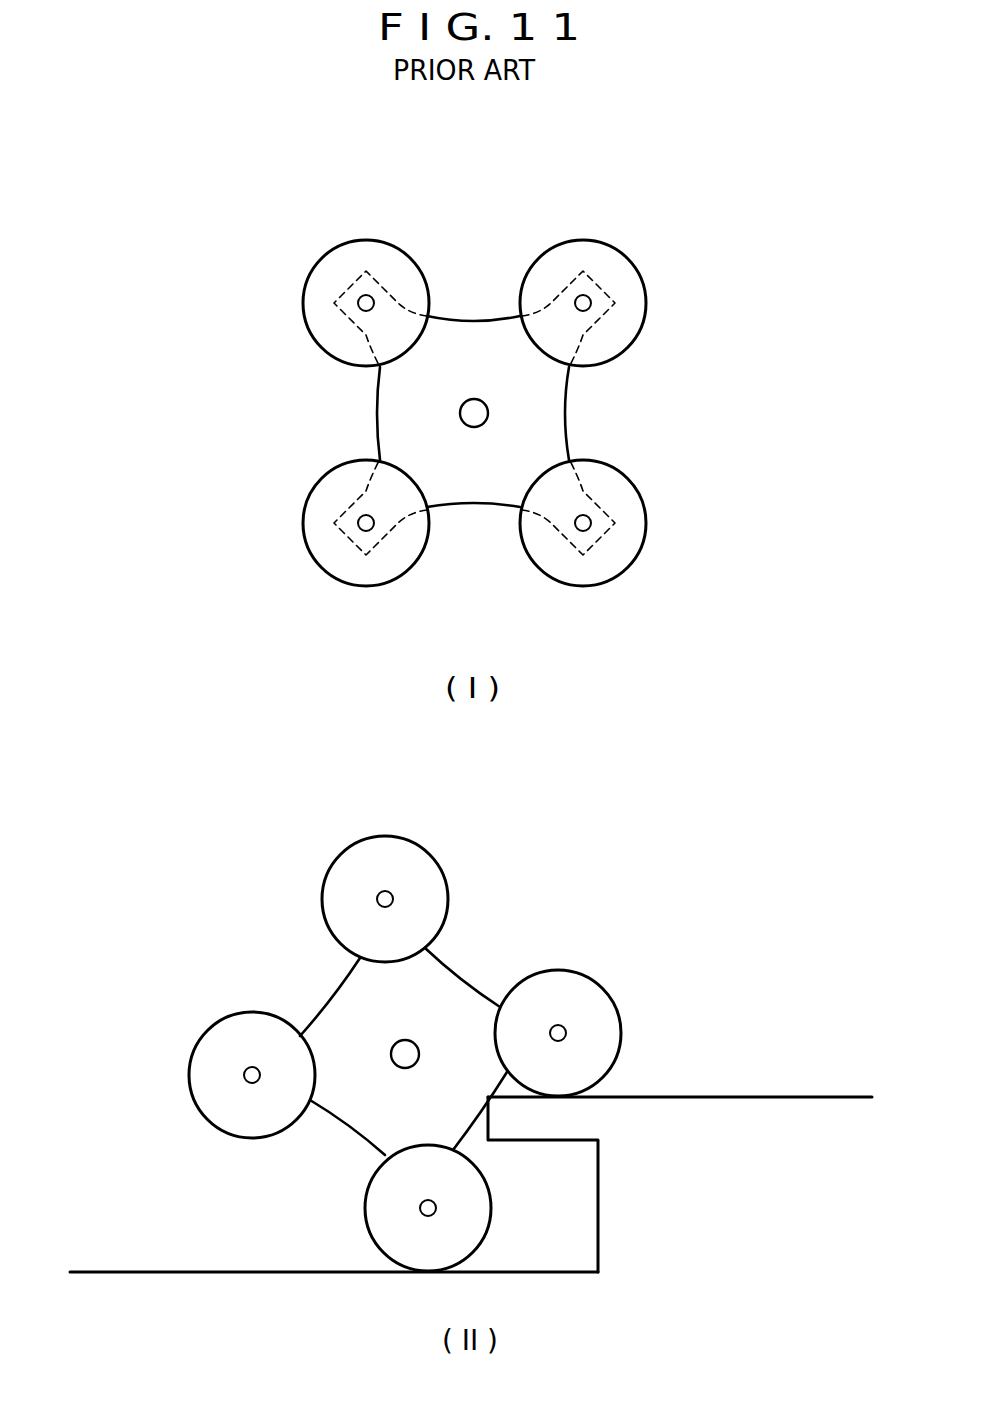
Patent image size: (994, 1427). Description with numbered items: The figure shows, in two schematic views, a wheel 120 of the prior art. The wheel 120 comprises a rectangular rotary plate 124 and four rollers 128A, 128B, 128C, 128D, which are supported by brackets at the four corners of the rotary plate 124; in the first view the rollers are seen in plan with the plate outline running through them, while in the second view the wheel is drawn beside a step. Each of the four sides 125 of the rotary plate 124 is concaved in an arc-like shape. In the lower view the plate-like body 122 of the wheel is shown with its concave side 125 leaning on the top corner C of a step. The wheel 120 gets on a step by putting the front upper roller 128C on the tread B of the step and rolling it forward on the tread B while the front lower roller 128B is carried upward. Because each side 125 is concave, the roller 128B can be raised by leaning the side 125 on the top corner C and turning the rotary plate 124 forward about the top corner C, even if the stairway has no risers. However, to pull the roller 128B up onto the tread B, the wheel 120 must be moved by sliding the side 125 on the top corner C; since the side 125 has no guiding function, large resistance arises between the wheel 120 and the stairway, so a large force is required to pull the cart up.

The wheel 120 is at (288, 246).
The holder plate (side view) 122 is at (482, 1008).
The rotary plate 124 is at (473, 480).
The side 125 is at (565, 412).
The roller 128A is at (335, 562).
The front lower roller 128B is at (600, 565).
The front upper roller 128C is at (605, 267).
The roller 128D is at (337, 267).
The tread B is at (808, 1098).
The top corner C is at (490, 1100).